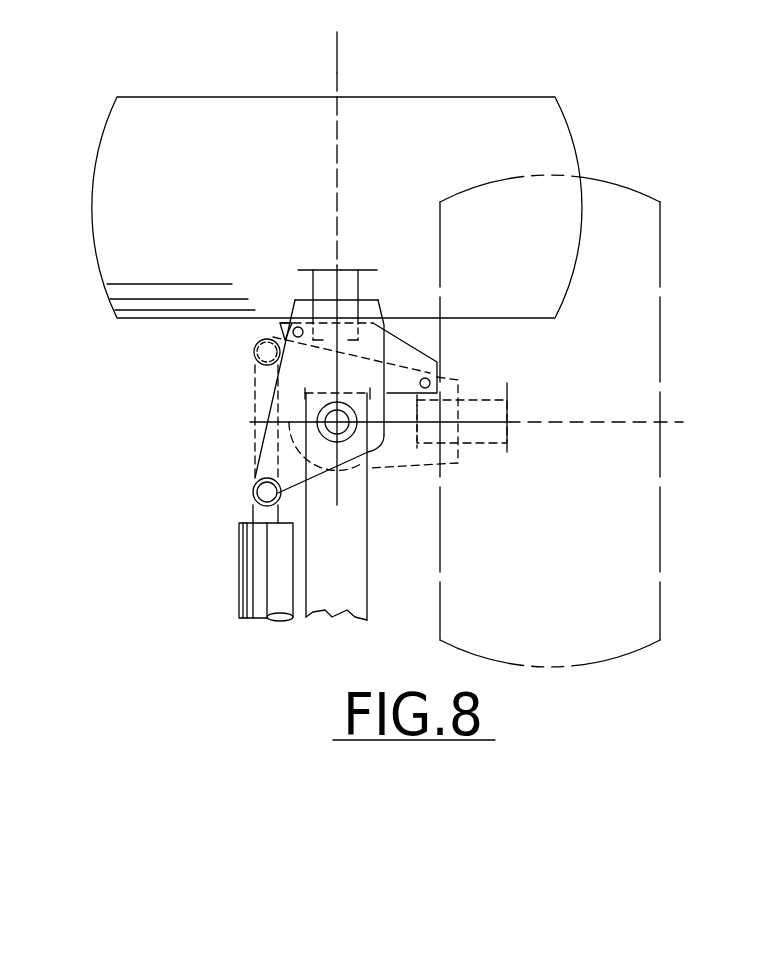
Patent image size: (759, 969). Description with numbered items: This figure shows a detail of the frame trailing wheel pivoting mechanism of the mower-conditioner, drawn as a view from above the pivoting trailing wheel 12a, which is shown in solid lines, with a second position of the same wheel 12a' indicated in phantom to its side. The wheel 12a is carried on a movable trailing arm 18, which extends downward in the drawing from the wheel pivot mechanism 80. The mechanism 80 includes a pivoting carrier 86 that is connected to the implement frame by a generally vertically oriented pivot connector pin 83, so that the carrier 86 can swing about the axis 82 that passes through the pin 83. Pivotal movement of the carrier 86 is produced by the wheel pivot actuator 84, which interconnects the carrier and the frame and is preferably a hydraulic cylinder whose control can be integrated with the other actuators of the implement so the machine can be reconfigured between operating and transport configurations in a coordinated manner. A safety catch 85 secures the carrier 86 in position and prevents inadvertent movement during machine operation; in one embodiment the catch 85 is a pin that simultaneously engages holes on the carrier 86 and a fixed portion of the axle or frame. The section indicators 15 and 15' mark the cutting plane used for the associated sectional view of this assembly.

The section line 15 is at (274, 149).
The section line 15' is at (494, 384).
The pivoting trailing wheel 12a is at (337, 181).
The adjacent tank (phantom) 12a' is at (561, 447).
The trailing arm 18 is at (330, 595).
The wheel pivot mechanism 80 is at (210, 417).
The axis 82 is at (337, 422).
The pivot connector pin 83 is at (337, 422).
The wheel pivot actuator 84 is at (253, 563).
The safety catch 85 is at (293, 333).
The pivoting carrier 86 is at (257, 366).